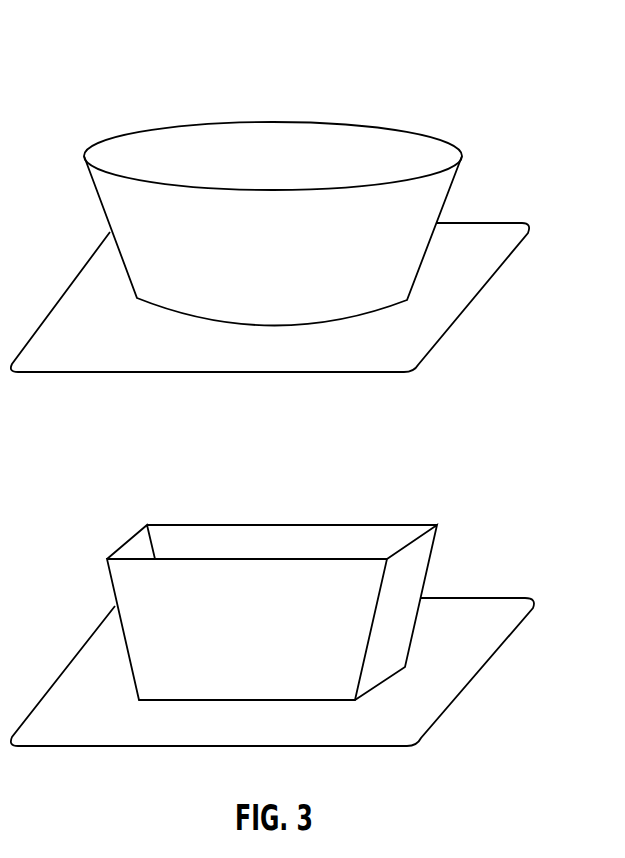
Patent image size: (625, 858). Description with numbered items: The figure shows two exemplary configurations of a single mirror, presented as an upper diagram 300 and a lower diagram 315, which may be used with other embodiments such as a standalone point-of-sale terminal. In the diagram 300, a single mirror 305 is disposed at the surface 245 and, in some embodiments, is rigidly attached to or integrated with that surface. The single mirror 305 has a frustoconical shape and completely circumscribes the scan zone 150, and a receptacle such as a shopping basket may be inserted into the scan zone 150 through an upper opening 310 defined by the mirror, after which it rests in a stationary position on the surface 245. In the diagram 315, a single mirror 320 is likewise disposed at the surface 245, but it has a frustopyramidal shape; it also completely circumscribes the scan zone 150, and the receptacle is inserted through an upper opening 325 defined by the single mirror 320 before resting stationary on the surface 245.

The diagram 300 is at (335, 176).
The scan zone 150 is at (317, 363).
The upper opening 310 is at (375, 145).
The single mirror 305 is at (458, 166).
The surface 245 is at (440, 332).
The diagram 315 is at (319, 559).
The upper opening 325 is at (325, 537).
The single mirror 320 is at (436, 545).